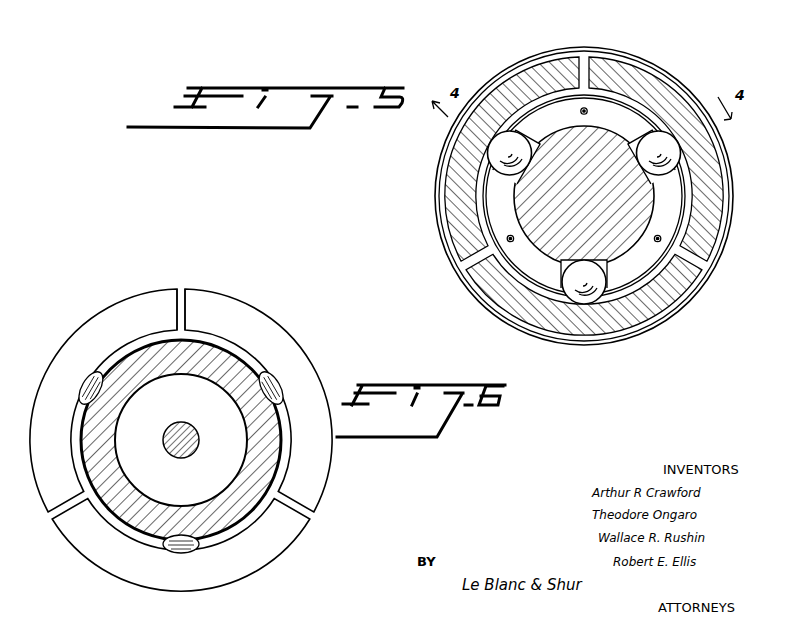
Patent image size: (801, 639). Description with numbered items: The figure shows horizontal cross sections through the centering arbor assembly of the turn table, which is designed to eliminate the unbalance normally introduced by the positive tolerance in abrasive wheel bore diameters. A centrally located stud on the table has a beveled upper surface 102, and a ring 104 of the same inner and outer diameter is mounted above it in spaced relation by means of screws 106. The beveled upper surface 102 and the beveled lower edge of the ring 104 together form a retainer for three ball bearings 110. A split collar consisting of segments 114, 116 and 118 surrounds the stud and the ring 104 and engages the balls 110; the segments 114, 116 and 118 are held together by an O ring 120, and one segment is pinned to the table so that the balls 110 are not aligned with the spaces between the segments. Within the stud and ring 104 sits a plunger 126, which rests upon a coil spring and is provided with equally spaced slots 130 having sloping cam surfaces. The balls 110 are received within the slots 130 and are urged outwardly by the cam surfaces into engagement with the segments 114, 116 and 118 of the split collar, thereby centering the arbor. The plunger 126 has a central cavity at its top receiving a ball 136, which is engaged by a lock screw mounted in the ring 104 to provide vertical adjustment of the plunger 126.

In FIG. 5, the beveled upper surface 102 is at (533, 267).
In FIG. 6, the ring 104 is at (273, 463).
In FIG. 5, the screws 106 is at (585, 108).
In FIG. 5, the ball bearings 110 is at (670, 133).
In FIG. 6, the ball bearings 110 is at (87, 373).
In FIG. 5, the segment 114 is at (517, 77).
In FIG. 6, the segment 114 is at (128, 303).
In FIG. 5, the segment 116 is at (640, 323).
In FIG. 6, the segment 116 is at (90, 545).
In FIG. 5, the segment 118 is at (640, 75).
In FIG. 6, the segment 118 is at (262, 325).
In FIG. 5, the O ring 120 is at (478, 97).
In FIG. 6, the O ring 120 is at (181, 287).
In FIG. 5, the plunger 126 is at (600, 183).
In FIG. 6, the plunger 126 is at (194, 404).
In FIG. 5, the slots 130 is at (543, 148).
In FIG. 6, the ball 136 is at (164, 444).